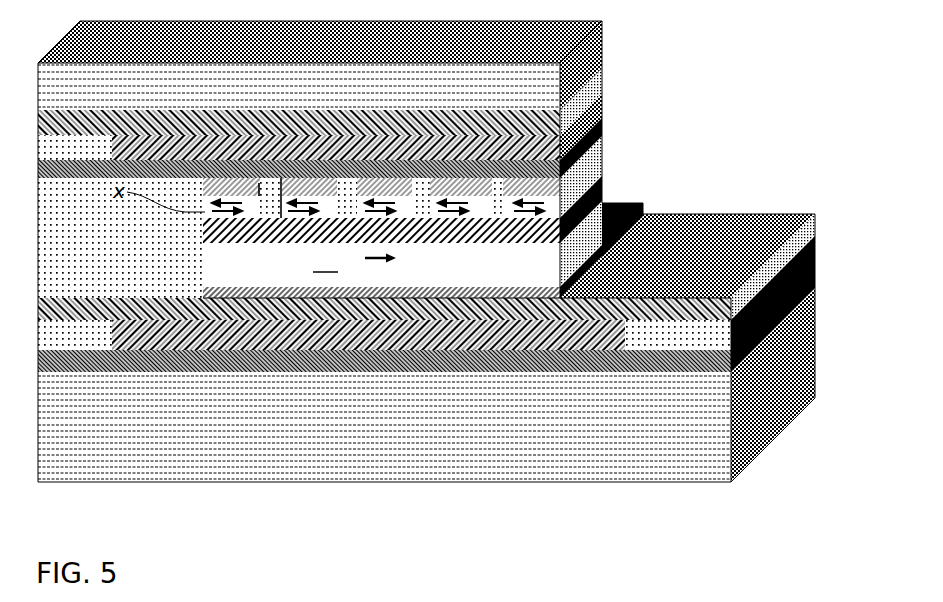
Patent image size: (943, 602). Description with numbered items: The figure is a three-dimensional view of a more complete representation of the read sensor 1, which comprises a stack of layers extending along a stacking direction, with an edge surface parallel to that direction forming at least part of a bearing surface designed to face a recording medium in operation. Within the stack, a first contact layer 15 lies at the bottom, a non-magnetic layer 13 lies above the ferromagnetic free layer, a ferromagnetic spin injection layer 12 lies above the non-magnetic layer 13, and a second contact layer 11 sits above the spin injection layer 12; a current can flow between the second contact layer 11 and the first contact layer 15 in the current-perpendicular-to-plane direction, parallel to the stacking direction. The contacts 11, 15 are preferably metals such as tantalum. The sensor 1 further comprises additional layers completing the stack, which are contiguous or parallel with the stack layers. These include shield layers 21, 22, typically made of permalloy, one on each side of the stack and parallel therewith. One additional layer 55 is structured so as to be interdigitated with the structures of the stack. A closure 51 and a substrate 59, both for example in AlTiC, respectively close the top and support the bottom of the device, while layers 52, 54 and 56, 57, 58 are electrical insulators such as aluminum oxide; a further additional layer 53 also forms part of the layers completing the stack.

The read sensor 1 is at (650, 517).
The second contact layer 11 is at (205, 297).
The spin injection layer 12 is at (223, 270).
The non-magnetic layer 13 is at (500, 232).
The first contact layer 15 is at (602, 183).
The shield layer 21 is at (602, 115).
The shield layer 22 is at (402, 284).
The closure 51 is at (602, 52).
The electrical insulator layer 52 is at (602, 86).
The additional layer 53 is at (92, 157).
The electrical insulator layer 54 is at (602, 148).
The additional layer 55 is at (92, 242).
The electrical insulator layer 56 is at (92, 322).
The electrical insulator layer 57 is at (65, 347).
The electrical insulator layer 58 is at (563, 373).
The substrate 59 is at (570, 467).